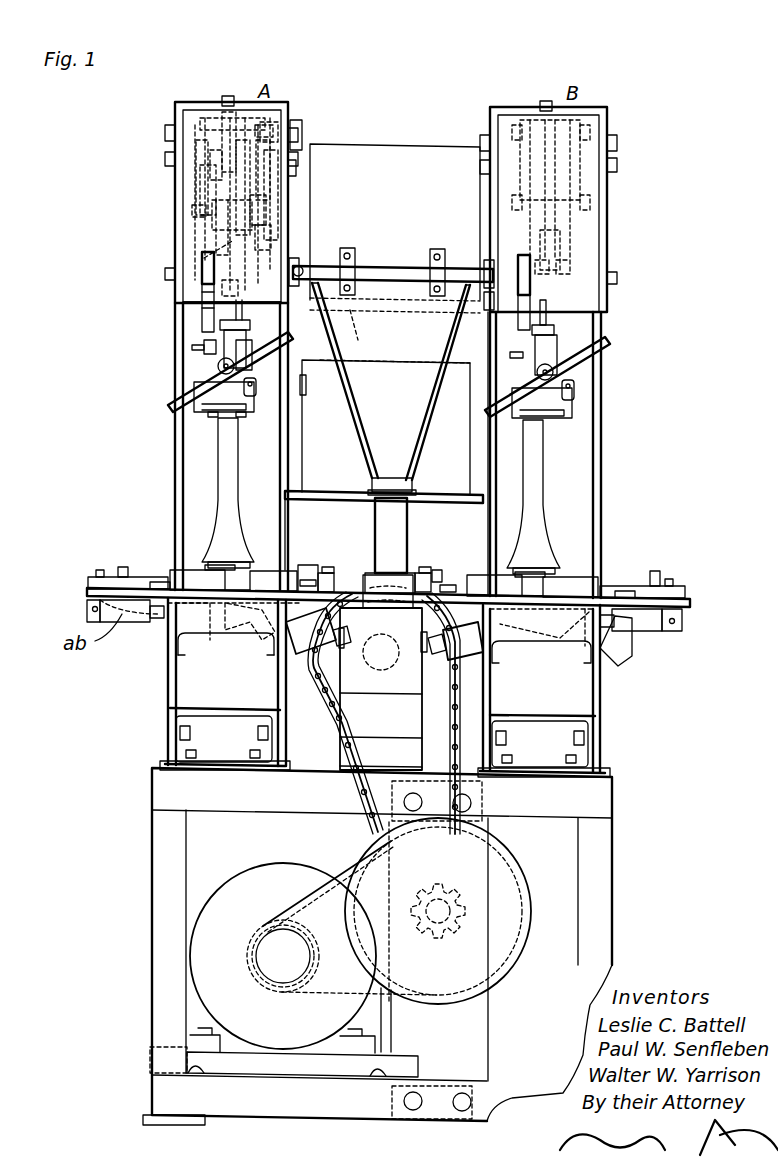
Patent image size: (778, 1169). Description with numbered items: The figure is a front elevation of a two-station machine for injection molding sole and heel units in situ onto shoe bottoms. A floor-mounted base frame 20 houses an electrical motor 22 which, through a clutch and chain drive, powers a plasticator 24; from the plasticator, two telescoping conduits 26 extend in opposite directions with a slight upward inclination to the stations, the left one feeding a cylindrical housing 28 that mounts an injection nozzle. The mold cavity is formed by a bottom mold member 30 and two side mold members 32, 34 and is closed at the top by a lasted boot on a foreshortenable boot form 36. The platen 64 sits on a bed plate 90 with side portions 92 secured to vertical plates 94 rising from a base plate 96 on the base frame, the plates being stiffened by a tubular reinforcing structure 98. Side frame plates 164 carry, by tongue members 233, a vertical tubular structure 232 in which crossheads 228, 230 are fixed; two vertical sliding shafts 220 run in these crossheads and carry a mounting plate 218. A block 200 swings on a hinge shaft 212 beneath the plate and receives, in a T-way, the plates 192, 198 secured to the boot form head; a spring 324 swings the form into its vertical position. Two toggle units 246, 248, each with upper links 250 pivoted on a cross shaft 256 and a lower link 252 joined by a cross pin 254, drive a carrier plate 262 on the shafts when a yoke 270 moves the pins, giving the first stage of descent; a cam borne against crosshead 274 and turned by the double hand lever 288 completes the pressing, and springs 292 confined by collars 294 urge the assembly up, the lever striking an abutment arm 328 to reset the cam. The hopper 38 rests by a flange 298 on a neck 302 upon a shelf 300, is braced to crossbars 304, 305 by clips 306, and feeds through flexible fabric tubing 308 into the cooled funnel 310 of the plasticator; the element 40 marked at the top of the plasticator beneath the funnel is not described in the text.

The base frame 20 is at (152, 895).
The electrical motor 22 is at (215, 1002).
The plasticator 24 is at (343, 693).
The telescoping conduits 26 is at (289, 658).
The cylindrical housing 28 is at (234, 636).
The bottom mold member 30 is at (268, 555).
The side mold member 32 is at (170, 583).
The side mold member 34 is at (318, 555).
The boot form 36 is at (232, 532).
The hopper 38 is at (437, 418).
The chute connection 40 is at (365, 578).
The platen 64 is at (118, 577).
The bed plate 90 is at (180, 620).
The side portion 92 is at (175, 650).
The vertical plates 94 is at (172, 697).
The base plate 96 is at (192, 762).
The tubular reinforcing structure 98 is at (224, 739).
The frame plates 164 is at (290, 450).
The plate 192 is at (220, 416).
The overlying plate 198 is at (233, 416).
The block 200 is at (298, 392).
The hinge pin or shaft 212 is at (290, 380).
The mounting plate 218 is at (245, 376).
The vertical sliding shafts 220 is at (202, 300).
The crosshead 228 is at (302, 132).
The crosshead 230 is at (243, 312).
The vertical tubular structure 232 is at (283, 190).
The tongue members 233 is at (177, 130).
The toggle unit 246 is at (182, 160).
The toggle unit 248 is at (287, 131).
The upper links 250 is at (196, 172).
The lower link 252 is at (230, 235).
The cross pin 254 is at (200, 198).
The cross shaft 256 is at (226, 104).
The carrier plate 262 is at (300, 262).
The yoke 270 is at (215, 222).
The crosshead 274 is at (225, 338).
The double hand lever 288 is at (203, 392).
The springs 292 is at (244, 288).
The collar 294 is at (204, 258).
The flange 298 is at (412, 492).
The shelf 300 is at (384, 484).
The neck 302 is at (392, 478).
The crossbar 304 is at (400, 275).
The crossbar 305 is at (395, 336).
The clips 306 is at (432, 258).
The flexible fabric tubing 308 is at (405, 526).
The funnel 310 is at (415, 575).
The spring 324 is at (216, 360).
The abutment arm 328 is at (208, 348).